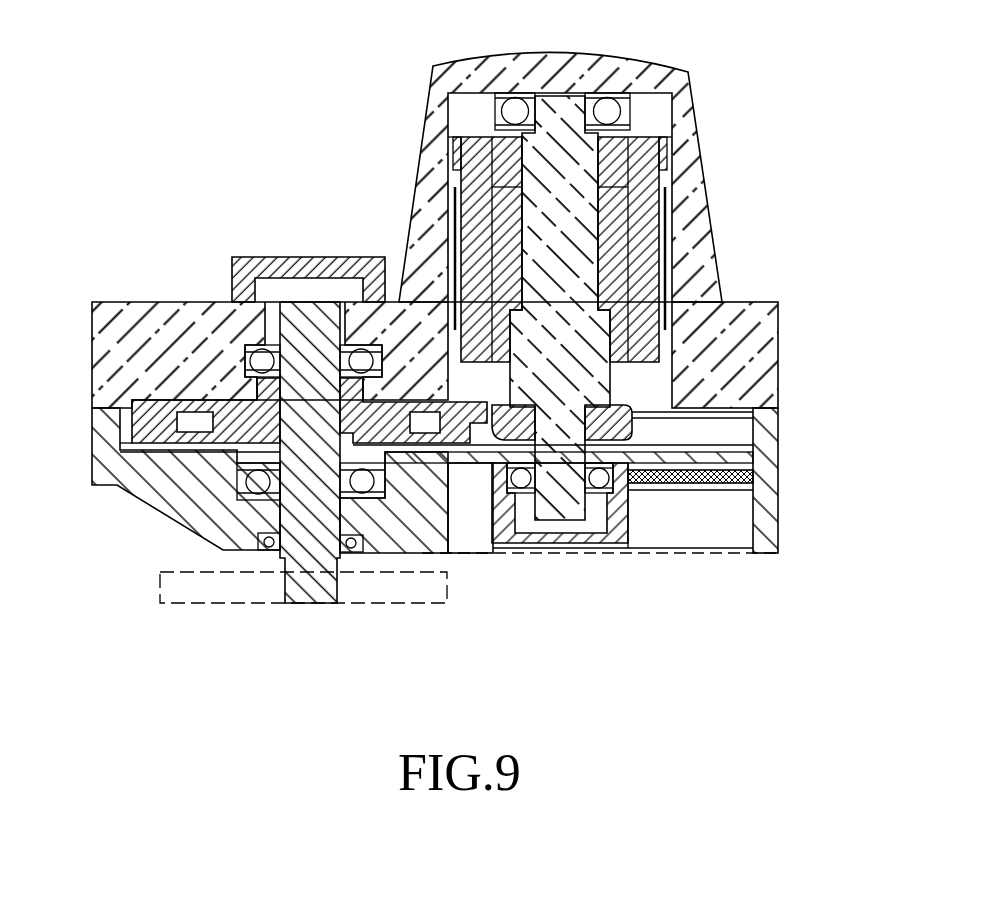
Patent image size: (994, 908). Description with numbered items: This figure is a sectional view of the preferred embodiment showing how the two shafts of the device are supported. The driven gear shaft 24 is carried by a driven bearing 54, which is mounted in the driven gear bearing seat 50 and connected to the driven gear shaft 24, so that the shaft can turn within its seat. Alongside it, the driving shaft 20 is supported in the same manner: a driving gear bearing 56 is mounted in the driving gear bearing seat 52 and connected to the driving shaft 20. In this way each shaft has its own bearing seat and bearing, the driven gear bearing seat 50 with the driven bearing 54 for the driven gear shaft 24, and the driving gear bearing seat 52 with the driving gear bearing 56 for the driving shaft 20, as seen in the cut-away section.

The driving shaft 20 is at (567, 221).
The driven gear shaft 24 is at (307, 345).
The driven gear bearing seat 50 is at (373, 500).
The driving gear bearing seat 52 is at (497, 482).
The driven bearing 54 is at (237, 481).
The driving gear bearing 56 is at (627, 478).